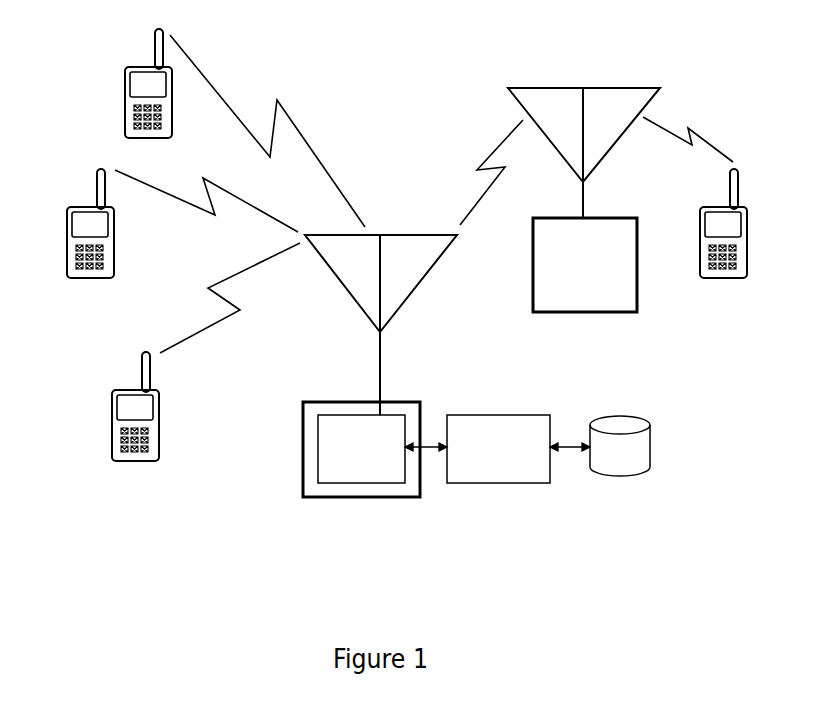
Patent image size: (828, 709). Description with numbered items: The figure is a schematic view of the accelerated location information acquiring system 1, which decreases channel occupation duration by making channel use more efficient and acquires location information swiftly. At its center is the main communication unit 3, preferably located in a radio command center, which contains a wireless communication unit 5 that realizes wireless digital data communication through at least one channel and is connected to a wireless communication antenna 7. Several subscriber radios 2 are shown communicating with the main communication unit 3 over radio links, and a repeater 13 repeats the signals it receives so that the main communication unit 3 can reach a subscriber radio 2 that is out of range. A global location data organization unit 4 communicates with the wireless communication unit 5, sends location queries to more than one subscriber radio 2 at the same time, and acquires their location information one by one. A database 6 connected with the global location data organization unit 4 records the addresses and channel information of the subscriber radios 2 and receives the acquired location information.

The accelerated location information acquiring system 1 is at (377, 108).
The subscriber radio 2 is at (123, 78).
The main communication unit 3 is at (380, 425).
The global location data organization unit 4 is at (498, 449).
The wireless communication unit 5 is at (420, 402).
The database 6 is at (620, 446).
The wireless communication antenna 7 is at (450, 250).
The repeater 13 is at (584, 200).